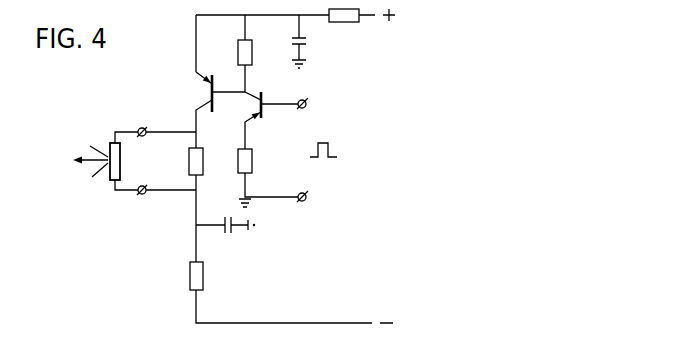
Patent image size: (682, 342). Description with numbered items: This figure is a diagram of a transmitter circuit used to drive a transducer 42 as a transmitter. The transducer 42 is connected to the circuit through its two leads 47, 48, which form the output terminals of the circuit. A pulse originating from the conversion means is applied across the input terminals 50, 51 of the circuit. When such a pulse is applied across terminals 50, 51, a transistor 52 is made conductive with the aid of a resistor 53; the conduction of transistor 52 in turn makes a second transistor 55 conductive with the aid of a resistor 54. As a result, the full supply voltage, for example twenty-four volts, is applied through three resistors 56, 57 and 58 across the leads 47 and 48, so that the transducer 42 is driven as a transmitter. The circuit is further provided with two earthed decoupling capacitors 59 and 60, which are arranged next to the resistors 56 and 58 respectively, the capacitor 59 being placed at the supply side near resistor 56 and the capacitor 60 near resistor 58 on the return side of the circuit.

The transducer 42 is at (110, 178).
The lead 47 is at (142, 128).
The lead 48 is at (142, 194).
The terminal 50 is at (306, 199).
The terminal 51 is at (306, 106).
The transistor 52 is at (262, 93).
The resistor 53 is at (250, 165).
The resistor 54 is at (247, 57).
The transistor 55 is at (213, 78).
The resistor 56 is at (345, 22).
The resistor 57 is at (200, 165).
The resistor 58 is at (202, 275).
The decoupling capacitor 59 is at (306, 40).
The decoupling capacitor 60 is at (232, 234).